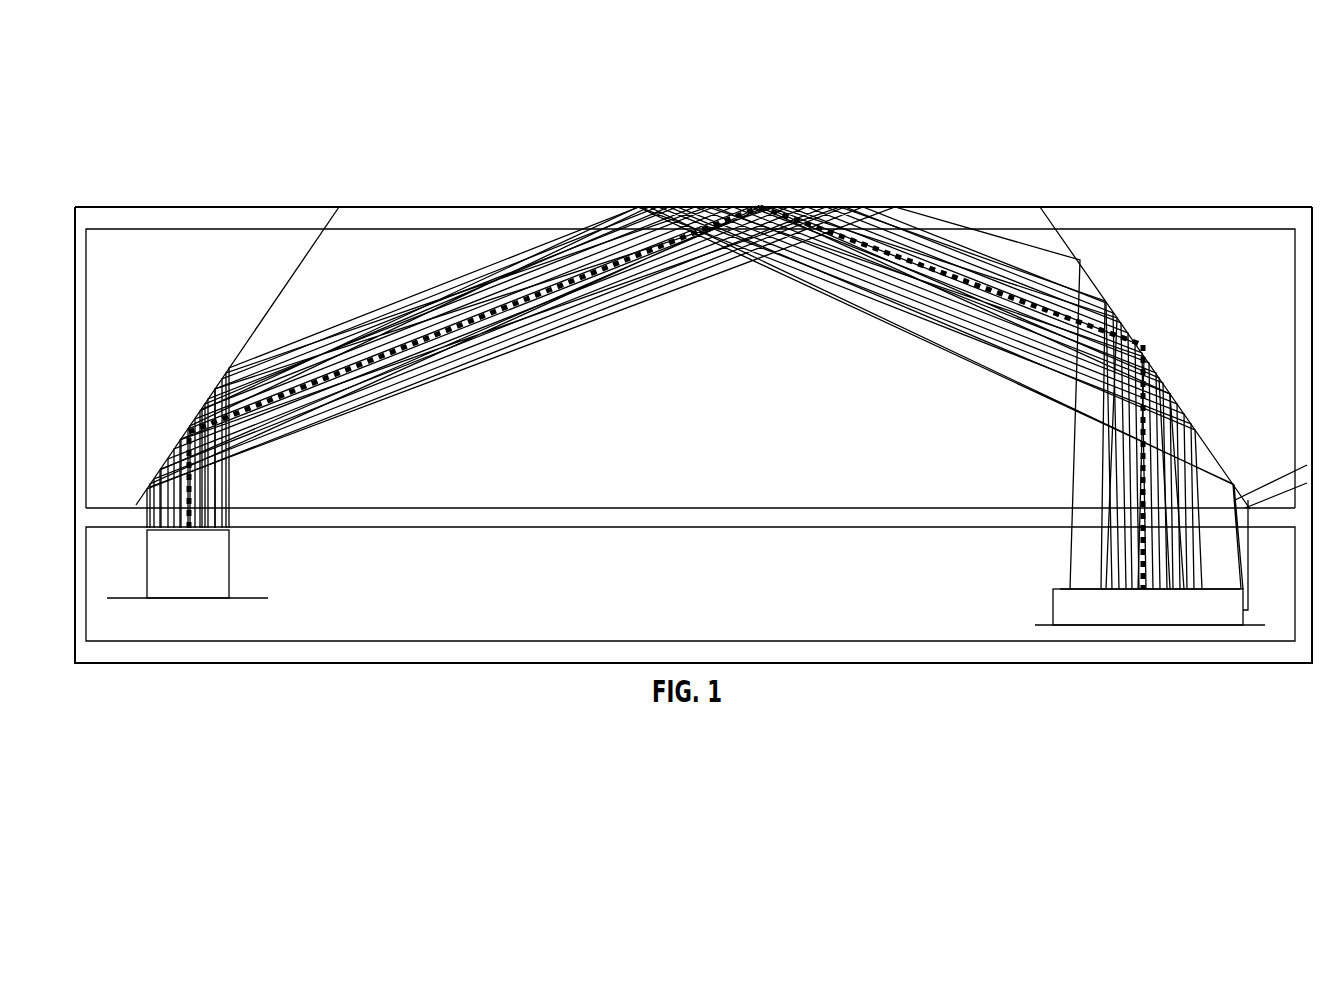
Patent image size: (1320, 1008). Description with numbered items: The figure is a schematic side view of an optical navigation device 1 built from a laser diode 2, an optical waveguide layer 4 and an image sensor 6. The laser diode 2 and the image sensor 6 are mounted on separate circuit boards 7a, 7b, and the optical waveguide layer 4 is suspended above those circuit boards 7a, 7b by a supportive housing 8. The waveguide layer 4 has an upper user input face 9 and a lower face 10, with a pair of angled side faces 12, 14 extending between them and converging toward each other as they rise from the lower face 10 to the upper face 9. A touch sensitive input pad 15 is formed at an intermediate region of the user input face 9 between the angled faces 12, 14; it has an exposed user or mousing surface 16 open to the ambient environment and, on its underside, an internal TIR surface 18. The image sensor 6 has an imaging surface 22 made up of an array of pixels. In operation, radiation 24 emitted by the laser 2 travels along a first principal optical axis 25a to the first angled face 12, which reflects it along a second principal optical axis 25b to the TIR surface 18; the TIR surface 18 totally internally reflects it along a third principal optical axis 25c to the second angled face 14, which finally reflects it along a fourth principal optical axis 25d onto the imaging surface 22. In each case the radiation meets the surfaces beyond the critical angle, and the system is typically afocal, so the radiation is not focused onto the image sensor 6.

The optical navigation device 1 is at (308, 166).
The laser diode 2 is at (147, 560).
The optical waveguide layer 4 is at (856, 492).
The image sensor 6 is at (1057, 604).
The circuit board 7a is at (128, 600).
The circuit board 7b is at (1250, 641).
The supportive housing 8 is at (102, 517).
The user input face 9 is at (470, 207).
The lower face 10 is at (633, 512).
The first angled face 12 is at (272, 303).
The second angled face 14 is at (1130, 343).
The touch sensitive input pad 15 is at (738, 181).
The exposed user surface 16 is at (832, 207).
The TIR surface 18 is at (764, 289).
The imaging surface 22 is at (1128, 588).
The radiation 24 is at (418, 358).
The first principal optical axis 25a is at (205, 470).
The second principal optical axis 25b is at (514, 300).
The third principal optical axis 25c is at (968, 284).
The fourth principal optical axis 25d is at (1165, 450).